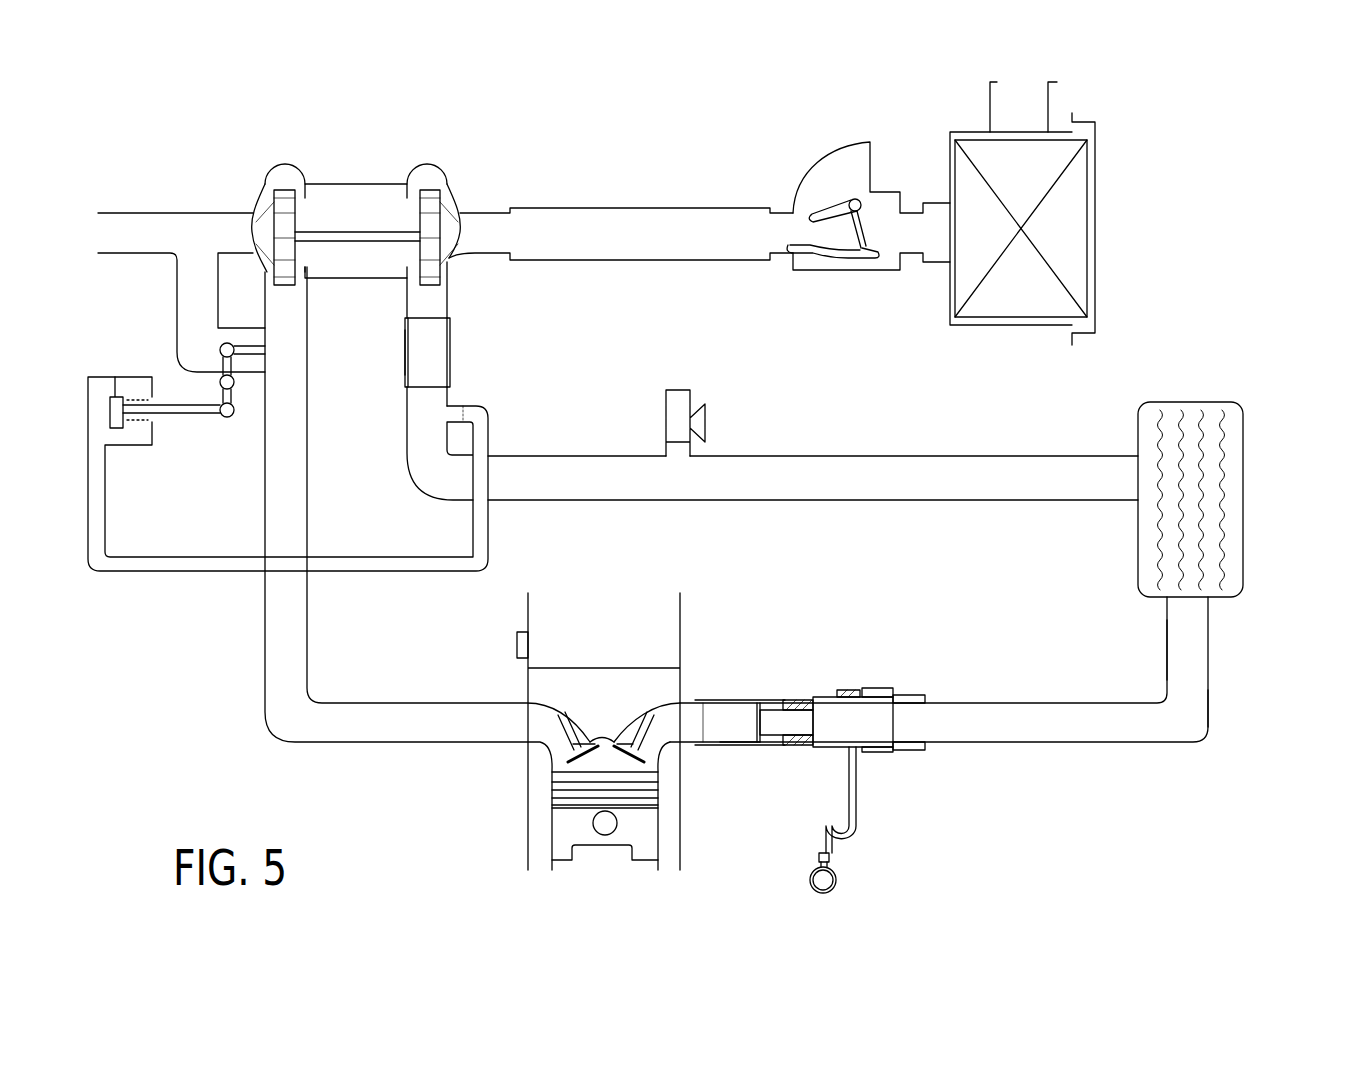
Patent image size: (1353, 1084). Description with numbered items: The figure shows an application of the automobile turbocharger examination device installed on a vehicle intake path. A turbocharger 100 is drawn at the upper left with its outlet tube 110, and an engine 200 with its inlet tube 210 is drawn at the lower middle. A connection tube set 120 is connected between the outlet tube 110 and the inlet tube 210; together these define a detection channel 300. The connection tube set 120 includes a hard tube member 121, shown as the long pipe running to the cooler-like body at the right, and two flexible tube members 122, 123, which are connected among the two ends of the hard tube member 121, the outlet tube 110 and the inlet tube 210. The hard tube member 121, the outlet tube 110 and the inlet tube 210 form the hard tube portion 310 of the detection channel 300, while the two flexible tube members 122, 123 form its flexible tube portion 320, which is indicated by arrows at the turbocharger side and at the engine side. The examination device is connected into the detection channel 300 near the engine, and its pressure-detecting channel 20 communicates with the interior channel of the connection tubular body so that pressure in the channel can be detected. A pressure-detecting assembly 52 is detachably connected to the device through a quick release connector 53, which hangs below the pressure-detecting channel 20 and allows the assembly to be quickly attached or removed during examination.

The turbocharger 100 is at (347, 195).
The outlet tube 110 is at (430, 307).
The flexible tube member 123 is at (450, 350).
The flexible tube portion 320 is at (400, 352).
The hard tube member 121 is at (591, 467).
The inlet tube 210 is at (673, 712).
The flexible tube member 122 is at (725, 702).
The engine 200 is at (562, 823).
The pressure-detecting channel 20 is at (847, 750).
The quick release connector 53 is at (857, 753).
The pressure-detecting assembly 52 is at (828, 880).
The hard tube portion 310 is at (1151, 661).
The connection tube set 120 is at (1215, 606).
The detection channel 300 is at (1213, 735).